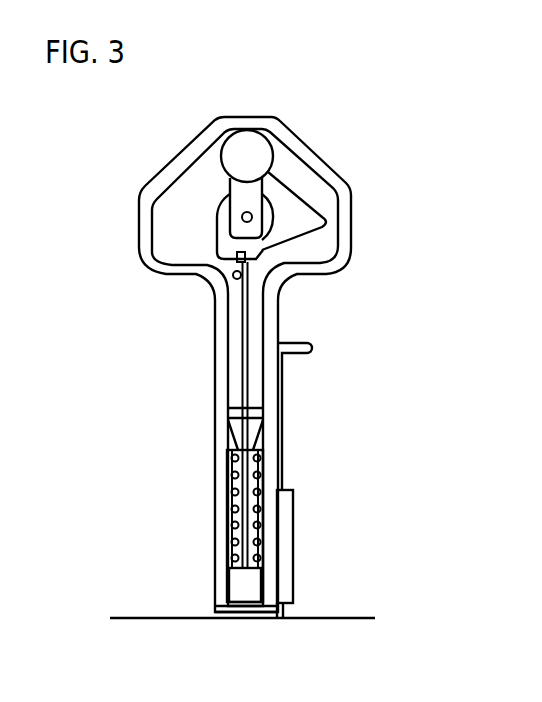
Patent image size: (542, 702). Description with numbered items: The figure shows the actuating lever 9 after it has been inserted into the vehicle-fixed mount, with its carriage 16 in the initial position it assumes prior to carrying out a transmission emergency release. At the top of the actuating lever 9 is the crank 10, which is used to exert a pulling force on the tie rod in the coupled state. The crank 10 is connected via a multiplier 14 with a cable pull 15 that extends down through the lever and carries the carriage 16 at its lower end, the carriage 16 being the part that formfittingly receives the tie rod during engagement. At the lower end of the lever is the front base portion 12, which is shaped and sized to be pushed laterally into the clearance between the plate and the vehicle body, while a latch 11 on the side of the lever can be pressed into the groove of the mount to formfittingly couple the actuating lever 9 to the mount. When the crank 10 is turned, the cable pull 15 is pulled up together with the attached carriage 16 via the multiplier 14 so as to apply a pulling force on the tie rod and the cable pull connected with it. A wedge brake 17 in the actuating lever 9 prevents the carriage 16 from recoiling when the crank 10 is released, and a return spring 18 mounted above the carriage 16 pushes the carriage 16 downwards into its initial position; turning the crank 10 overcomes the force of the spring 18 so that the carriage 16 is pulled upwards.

The actuating lever 9 is at (328, 274).
The crank 10 is at (272, 148).
The latch 11 is at (287, 384).
The front base portion 12 is at (248, 612).
The multiplier 14 is at (313, 237).
The cable pull 15 is at (253, 310).
The carriage 16 is at (253, 582).
The wedge brake 17 is at (238, 430).
The return spring 18 is at (258, 472).